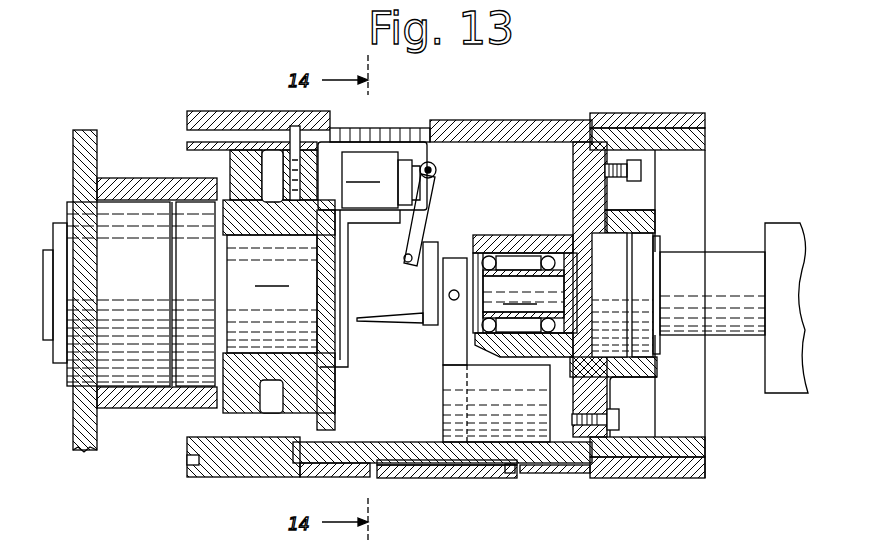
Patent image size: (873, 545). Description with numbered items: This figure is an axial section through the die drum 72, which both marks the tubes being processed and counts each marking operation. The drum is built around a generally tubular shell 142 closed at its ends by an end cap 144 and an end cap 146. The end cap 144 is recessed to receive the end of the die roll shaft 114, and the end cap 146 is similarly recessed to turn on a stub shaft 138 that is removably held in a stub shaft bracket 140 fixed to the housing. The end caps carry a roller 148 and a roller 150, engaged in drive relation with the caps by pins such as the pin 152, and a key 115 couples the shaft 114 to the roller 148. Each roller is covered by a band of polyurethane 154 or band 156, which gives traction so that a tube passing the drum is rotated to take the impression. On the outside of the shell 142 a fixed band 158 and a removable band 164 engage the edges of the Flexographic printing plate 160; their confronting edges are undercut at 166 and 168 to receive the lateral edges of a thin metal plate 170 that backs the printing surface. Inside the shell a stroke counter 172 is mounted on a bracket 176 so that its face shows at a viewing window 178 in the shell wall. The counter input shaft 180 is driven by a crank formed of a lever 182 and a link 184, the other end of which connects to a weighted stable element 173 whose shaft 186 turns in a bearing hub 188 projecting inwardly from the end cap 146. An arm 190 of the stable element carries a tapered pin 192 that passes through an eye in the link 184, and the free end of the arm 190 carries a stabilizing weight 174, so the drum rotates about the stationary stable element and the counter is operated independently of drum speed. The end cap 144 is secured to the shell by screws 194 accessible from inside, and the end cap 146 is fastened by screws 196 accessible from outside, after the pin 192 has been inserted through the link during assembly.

The die drum 72 is at (631, 104).
The die roll shaft 114 is at (272, 294).
The key 115 is at (245, 212).
The stub shaft 138 is at (727, 256).
The stub shaft bracket 140 is at (787, 235).
The tubular shell 142 is at (461, 122).
The end cap 144 is at (320, 354).
The end cap 146 is at (574, 198).
The roller 148 is at (188, 124).
The roller 150 is at (686, 165).
The pin 152 is at (279, 131).
The band of polyurethane 154 is at (222, 100).
The band of polyurethane 156 is at (676, 121).
The band 158 is at (322, 466).
The Flexographic printing plate 160 is at (416, 478).
The band 164 is at (562, 473).
The undercut 166 is at (371, 461).
The undercut 168 is at (510, 474).
The thin metal plate 170 is at (405, 460).
The stroke counter 172 is at (372, 176).
The stable element 173 is at (436, 400).
The stabilizing weight 174 is at (444, 390).
The bracket 176 is at (341, 250).
The viewing window 178 is at (417, 135).
The input shaft 180 is at (446, 178).
The lever 182 is at (432, 212).
The link 184 is at (424, 285).
The shaft 186 is at (523, 294).
The bearing hub 188 is at (506, 235).
The arm 190 is at (444, 345).
The tapered pin 192 is at (375, 310).
The screws 194 is at (320, 422).
The screws 196 is at (622, 176).